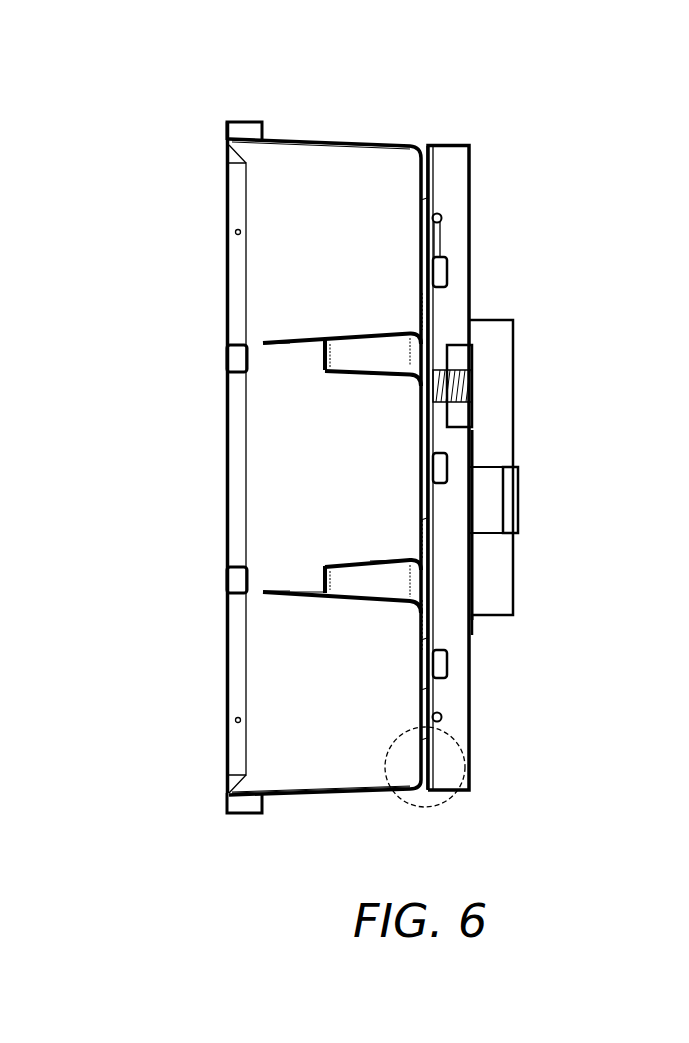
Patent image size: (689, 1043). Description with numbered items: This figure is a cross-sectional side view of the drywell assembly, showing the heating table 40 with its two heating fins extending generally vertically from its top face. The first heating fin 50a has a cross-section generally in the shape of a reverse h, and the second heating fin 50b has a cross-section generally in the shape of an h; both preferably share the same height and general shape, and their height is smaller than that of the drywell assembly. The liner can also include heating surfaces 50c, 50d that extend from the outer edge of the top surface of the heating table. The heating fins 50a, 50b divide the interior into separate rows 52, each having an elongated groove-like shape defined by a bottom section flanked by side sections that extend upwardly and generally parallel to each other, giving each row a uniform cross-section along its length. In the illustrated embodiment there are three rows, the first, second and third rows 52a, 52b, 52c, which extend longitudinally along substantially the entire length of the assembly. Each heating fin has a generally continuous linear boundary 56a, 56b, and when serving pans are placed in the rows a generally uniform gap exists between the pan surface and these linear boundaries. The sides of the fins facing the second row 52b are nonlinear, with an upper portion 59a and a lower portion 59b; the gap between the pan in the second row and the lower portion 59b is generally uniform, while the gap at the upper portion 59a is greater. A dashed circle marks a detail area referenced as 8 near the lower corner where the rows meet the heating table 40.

The detail area of FIG. 8 is at (400, 805).
The heating table 40 is at (430, 202).
The first heating fin 50a is at (277, 322).
The second heating fin 50b is at (278, 567).
The heating surface 50c is at (289, 112).
The heating surface 50d is at (287, 797).
The row 52 is at (262, 183).
The first row 52a is at (350, 213).
The second row 52b is at (352, 482).
The third row 52c is at (350, 698).
The generally continuous linear boundary 56a is at (374, 335).
The generally continuous linear boundary 56b is at (385, 605).
The upper portion 59a is at (291, 590).
The lower portion 59b is at (378, 560).